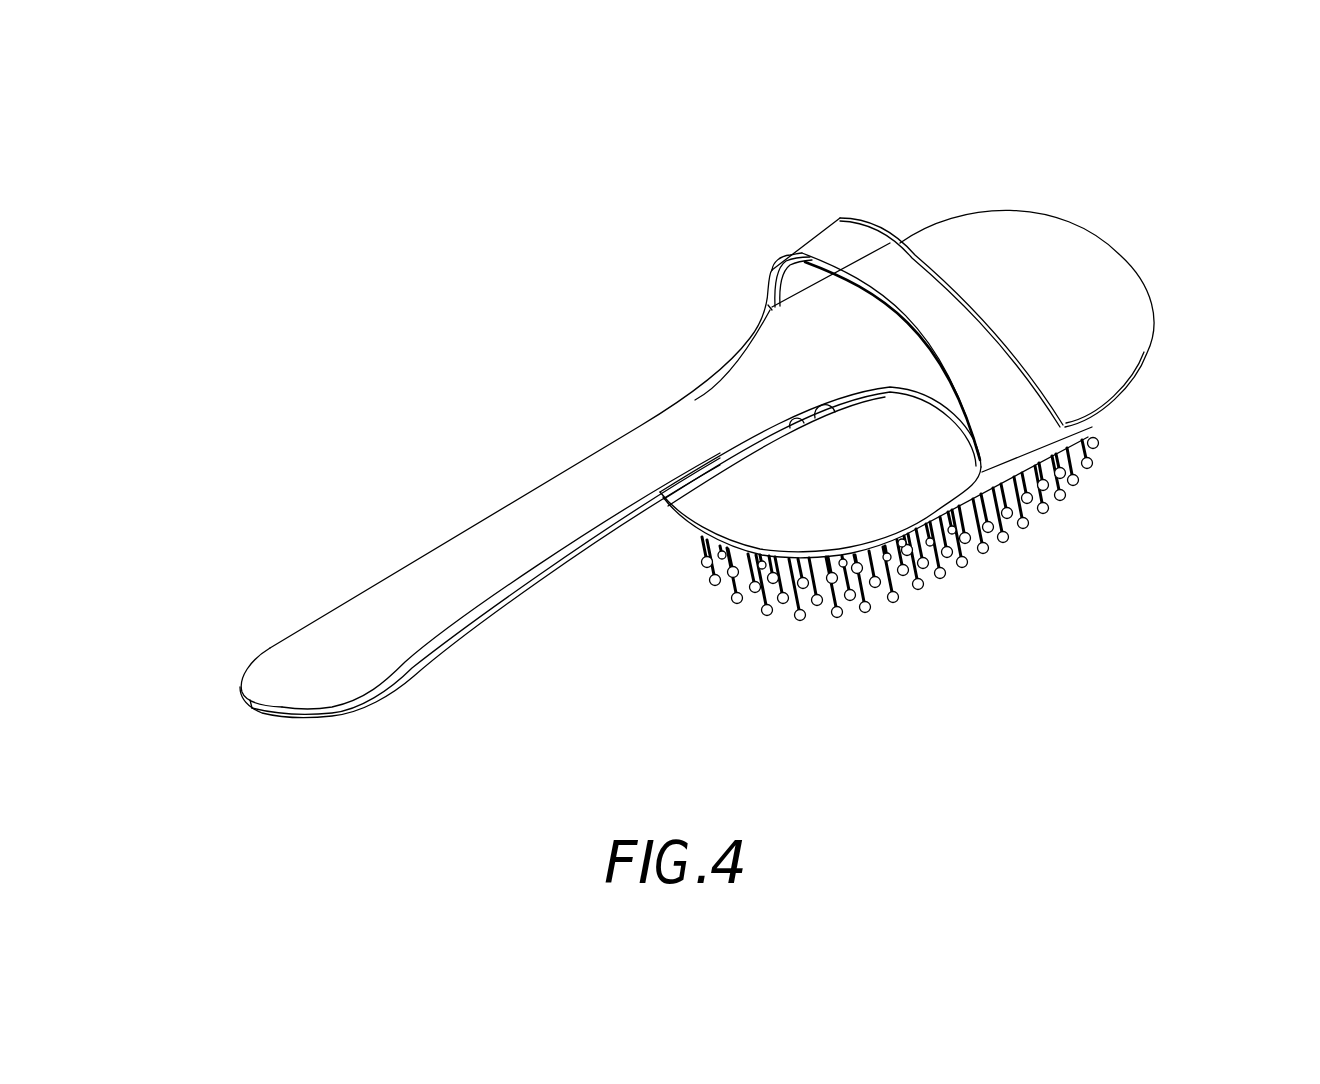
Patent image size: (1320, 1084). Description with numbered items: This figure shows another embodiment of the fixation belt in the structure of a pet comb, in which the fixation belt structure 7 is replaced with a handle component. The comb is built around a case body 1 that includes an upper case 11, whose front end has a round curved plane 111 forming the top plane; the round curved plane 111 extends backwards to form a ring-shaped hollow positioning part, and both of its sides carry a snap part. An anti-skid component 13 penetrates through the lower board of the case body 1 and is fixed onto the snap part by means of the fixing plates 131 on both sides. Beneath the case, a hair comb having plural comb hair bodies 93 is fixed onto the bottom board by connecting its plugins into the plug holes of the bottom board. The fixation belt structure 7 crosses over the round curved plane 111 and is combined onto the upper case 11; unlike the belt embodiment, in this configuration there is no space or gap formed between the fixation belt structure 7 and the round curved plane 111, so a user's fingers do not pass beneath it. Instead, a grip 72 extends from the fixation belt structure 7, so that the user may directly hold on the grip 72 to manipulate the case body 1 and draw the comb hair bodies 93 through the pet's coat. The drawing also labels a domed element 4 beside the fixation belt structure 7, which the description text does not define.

The case body 1 is at (725, 415).
The cover 4 is at (1063, 267).
The fixation belt structure 7 is at (832, 238).
The upper case 11 is at (494, 494).
The anti-skid component 13 is at (948, 551).
The grip 72 is at (450, 582).
The comb hair bodies 93 is at (1028, 525).
The round curved plane 111 is at (782, 470).
The fixing plates 131 is at (1040, 445).